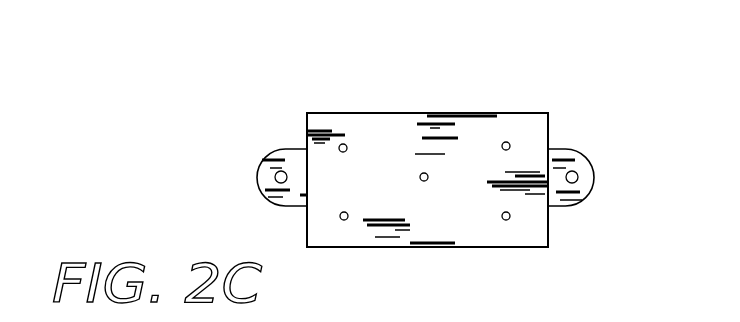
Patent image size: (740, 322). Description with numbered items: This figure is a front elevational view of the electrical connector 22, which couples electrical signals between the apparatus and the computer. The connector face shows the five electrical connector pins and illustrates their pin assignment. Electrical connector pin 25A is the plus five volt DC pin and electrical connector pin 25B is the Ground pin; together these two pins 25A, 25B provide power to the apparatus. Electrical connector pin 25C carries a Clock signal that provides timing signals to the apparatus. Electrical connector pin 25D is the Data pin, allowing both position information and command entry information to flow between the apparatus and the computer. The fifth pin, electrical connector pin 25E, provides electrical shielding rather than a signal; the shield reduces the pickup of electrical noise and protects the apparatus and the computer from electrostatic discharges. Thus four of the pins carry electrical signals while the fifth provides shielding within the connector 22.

The electrical connector 22 is at (444, 113).
The electrical connector pin 25A is at (347, 145).
The electrical connector pin 25B is at (507, 142).
The electrical connector pin 25C is at (346, 220).
The electrical connector pin 25D is at (510, 219).
The electrical connector pin 25E is at (423, 182).